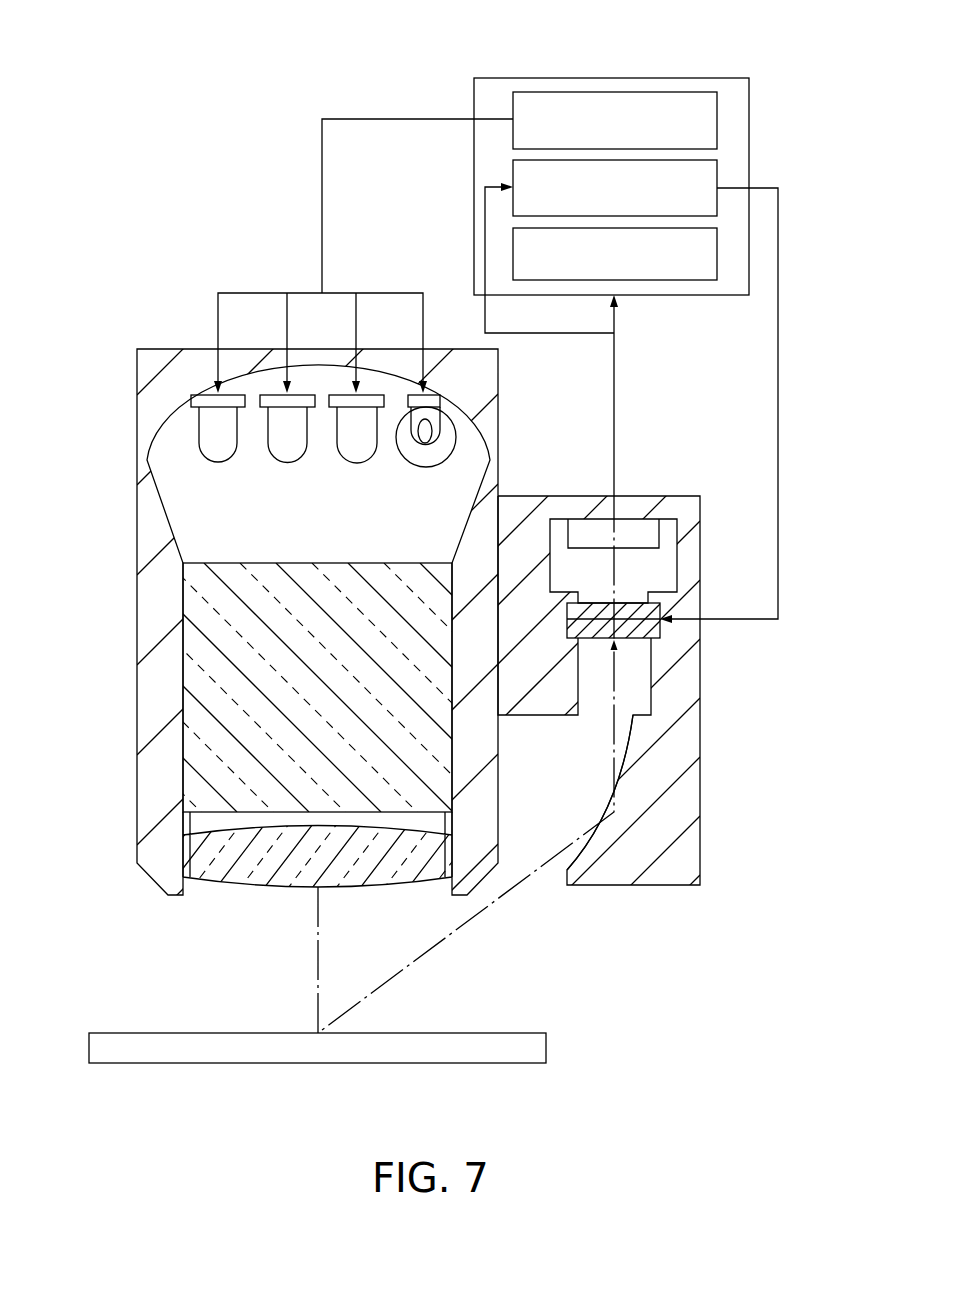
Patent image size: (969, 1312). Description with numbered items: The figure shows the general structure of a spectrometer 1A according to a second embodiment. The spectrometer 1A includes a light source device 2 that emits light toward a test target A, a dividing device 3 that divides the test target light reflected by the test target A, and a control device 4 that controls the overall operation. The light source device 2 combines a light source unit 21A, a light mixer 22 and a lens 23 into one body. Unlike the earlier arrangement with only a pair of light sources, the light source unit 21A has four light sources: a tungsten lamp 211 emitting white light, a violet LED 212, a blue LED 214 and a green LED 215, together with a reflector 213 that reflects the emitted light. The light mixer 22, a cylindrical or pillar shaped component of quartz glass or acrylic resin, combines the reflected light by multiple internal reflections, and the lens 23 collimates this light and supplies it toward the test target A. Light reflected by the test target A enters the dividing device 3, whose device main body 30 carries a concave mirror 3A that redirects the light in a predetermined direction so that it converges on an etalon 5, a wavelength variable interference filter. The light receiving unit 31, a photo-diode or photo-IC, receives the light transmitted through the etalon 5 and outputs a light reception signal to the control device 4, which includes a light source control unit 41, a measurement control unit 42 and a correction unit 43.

The spectrometer 1A is at (133, 70).
The light source device 2 is at (92, 292).
The light source unit 21A is at (169, 456).
The tungsten lamp 211 is at (428, 464).
The violet LED 212 is at (360, 461).
The reflector 213 is at (182, 408).
The blue LED 214 is at (292, 461).
The green LED 215 is at (222, 461).
The light mixer 22 is at (196, 676).
The lens 23 is at (198, 858).
The dividing device 3 is at (764, 687).
The device main body 30 is at (690, 782).
The light receiving unit 31 is at (647, 528).
The concave mirror 3A is at (580, 837).
The etalon 5 is at (590, 660).
The control device 4 is at (744, 56).
The light source control unit 41 is at (717, 118).
The measurement control unit 42 is at (717, 178).
The correction unit 43 is at (717, 250).
The test target A is at (535, 1045).